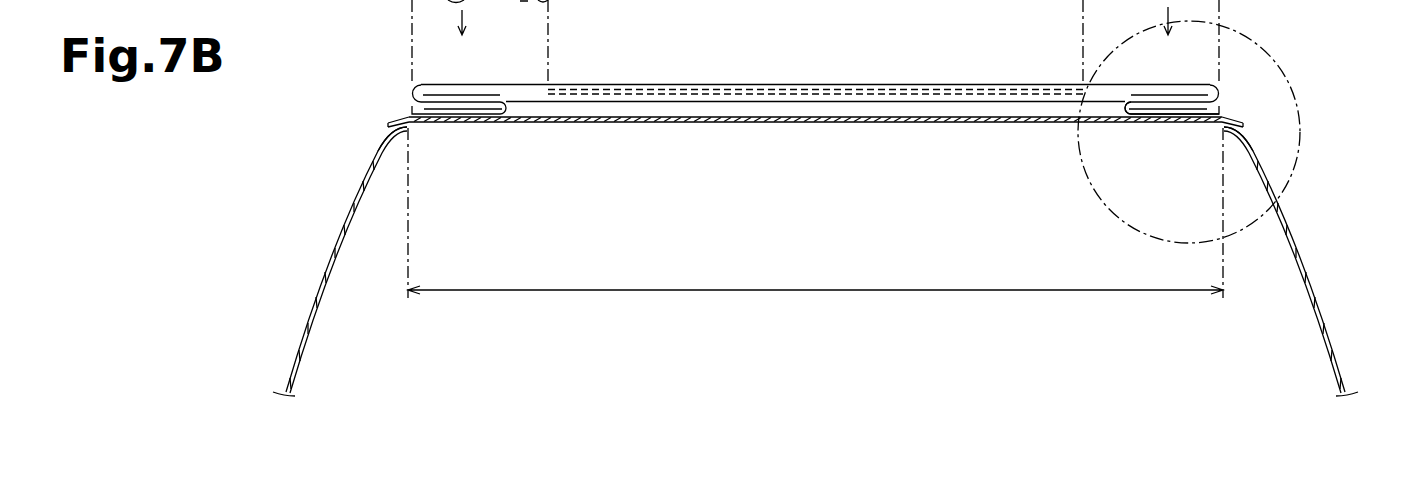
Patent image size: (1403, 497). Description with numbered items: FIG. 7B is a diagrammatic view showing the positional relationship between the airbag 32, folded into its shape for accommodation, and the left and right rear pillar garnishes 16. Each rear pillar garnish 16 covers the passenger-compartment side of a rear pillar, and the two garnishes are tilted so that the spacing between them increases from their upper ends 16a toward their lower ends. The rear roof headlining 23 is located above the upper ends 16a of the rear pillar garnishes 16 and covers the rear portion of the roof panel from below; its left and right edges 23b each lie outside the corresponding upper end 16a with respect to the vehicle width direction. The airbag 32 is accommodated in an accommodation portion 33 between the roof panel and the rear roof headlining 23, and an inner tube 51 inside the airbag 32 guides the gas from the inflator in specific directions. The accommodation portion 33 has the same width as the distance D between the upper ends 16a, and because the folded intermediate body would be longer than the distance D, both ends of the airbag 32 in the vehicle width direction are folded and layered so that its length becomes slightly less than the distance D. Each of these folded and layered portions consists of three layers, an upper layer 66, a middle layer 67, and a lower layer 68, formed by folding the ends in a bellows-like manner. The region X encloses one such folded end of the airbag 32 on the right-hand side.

The rear pillar garnish 16 is at (338, 233).
The upper end of rear pillar garnish 16a is at (414, 130).
The rear roof headlining 23 is at (663, 123).
The edge of rear roof headlining 23b is at (388, 125).
The airbag 32 is at (1257, 72).
The accommodation portion 33 is at (725, 76).
The inner tube 51 is at (843, 88).
The upper layer 66 is at (455, 88).
The middle layer 67 is at (487, 100).
The lower layer 68 is at (458, 113).
The distance between upper ends of rear pillar garnishes D is at (806, 292).
The enlarged region X is at (1295, 86).